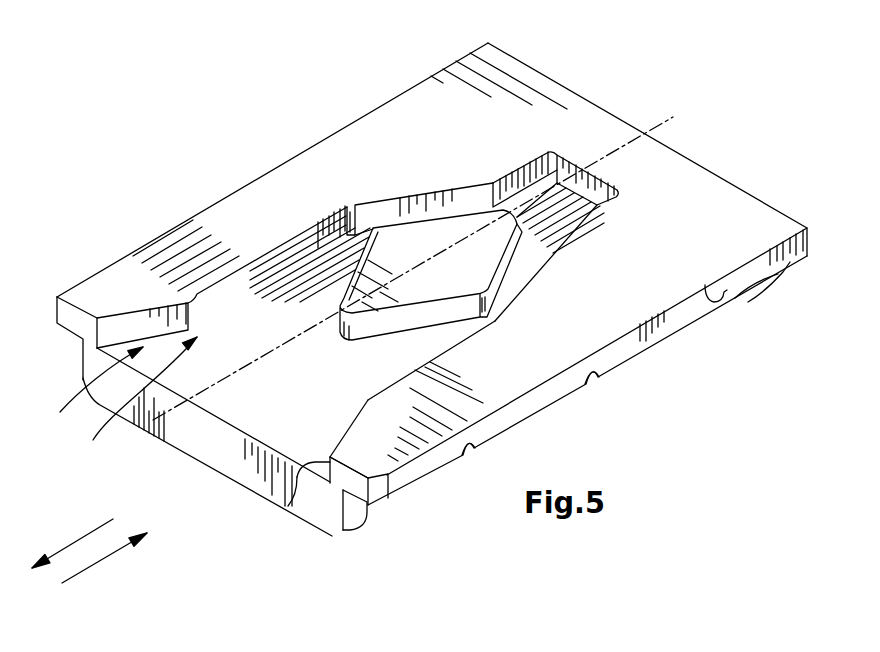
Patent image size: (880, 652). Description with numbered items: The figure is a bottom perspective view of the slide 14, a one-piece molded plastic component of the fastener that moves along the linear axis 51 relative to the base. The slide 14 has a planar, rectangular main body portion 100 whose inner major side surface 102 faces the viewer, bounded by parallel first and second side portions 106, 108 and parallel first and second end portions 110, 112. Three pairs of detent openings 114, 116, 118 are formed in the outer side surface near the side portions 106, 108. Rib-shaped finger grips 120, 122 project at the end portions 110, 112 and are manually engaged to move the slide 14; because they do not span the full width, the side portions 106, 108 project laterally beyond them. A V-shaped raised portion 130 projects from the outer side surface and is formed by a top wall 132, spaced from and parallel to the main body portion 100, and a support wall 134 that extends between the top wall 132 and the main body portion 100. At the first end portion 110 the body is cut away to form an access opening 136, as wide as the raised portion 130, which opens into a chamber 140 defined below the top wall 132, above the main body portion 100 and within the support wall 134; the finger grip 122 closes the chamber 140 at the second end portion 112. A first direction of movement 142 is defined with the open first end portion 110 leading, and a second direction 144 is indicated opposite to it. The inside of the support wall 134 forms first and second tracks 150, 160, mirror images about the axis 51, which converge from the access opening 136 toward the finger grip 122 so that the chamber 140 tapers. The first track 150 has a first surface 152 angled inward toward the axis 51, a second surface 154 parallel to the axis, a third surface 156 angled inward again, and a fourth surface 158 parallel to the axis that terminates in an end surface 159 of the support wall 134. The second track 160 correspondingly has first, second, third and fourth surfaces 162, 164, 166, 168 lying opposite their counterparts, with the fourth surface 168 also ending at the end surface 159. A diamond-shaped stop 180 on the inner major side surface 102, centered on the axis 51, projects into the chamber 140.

The slide 14 is at (674, 415).
The linear axis 51 is at (673, 117).
The main body portion 100 is at (431, 120).
The inner major side surface 102 is at (390, 130).
The first side portion 106 is at (281, 163).
The second side portion 108 is at (657, 330).
The first end portion 110 is at (362, 546).
The second end portion 112 is at (692, 155).
The detent openings 114 is at (706, 288).
The detent openings 116 is at (590, 376).
The detent openings 118 is at (467, 446).
The finger grip 120 is at (308, 502).
The finger grip 122 is at (767, 288).
The raised portion 130 is at (508, 158).
The top wall 132 is at (235, 406).
The support wall 134 is at (197, 457).
The access opening 136 is at (322, 527).
The chamber 140 is at (237, 362).
The first direction of movement 142 is at (88, 522).
The direction 144 is at (82, 575).
The first track 150 is at (60, 367).
The first surface 152 is at (128, 318).
The second surface 154 is at (233, 287).
The third surface 156 is at (398, 215).
The fourth surface 158 is at (547, 153).
The end surface 159 is at (622, 195).
The second track 160 is at (333, 428).
The first surface 162 is at (347, 425).
The second surface 164 is at (395, 382).
The third surface 166 is at (545, 263).
The fourth surface 168 is at (587, 217).
The stop 180 is at (428, 258).